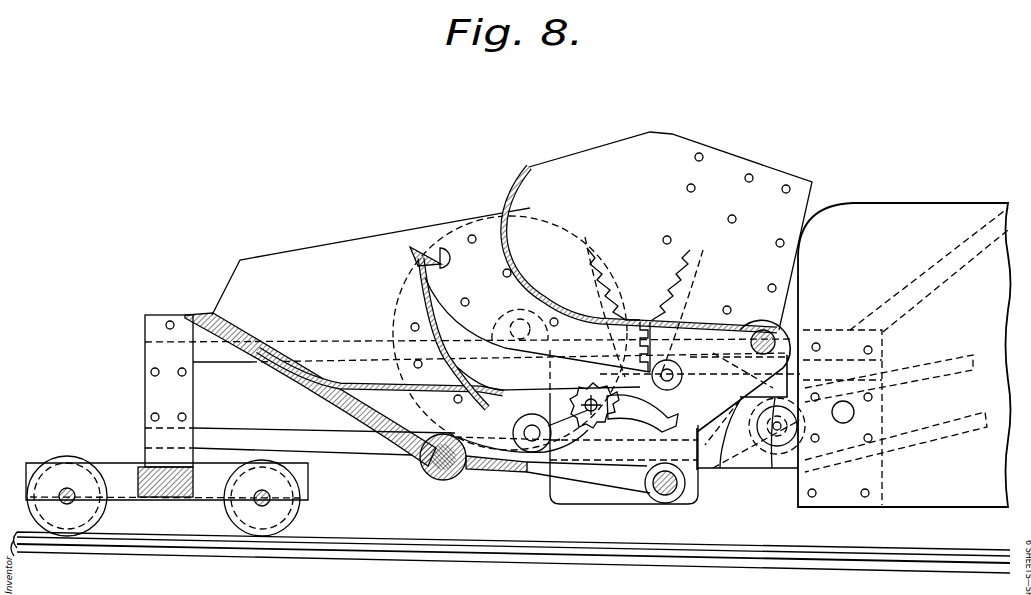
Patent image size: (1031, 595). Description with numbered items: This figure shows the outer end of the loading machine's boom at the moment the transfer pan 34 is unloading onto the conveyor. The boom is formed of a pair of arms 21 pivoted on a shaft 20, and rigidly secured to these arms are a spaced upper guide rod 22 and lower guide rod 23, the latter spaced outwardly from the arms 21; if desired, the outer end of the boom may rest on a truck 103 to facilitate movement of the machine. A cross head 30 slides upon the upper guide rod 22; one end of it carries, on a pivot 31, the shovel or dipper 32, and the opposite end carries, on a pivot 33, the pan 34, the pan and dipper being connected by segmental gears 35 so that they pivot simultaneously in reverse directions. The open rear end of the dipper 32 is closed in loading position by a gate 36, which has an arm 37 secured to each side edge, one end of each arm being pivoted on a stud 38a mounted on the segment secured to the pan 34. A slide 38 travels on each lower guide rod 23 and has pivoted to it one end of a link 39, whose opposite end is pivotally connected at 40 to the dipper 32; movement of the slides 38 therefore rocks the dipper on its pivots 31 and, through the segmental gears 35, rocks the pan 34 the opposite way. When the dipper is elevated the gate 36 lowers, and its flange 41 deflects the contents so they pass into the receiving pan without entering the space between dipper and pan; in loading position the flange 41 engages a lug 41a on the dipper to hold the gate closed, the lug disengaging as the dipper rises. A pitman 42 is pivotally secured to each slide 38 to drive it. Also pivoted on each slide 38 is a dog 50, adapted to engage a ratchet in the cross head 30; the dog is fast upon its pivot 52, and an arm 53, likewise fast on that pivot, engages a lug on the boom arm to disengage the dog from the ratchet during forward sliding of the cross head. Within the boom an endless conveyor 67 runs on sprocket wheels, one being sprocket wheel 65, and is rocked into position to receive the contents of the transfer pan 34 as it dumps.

The shaft 20 is at (855, 412).
The arms 21 is at (310, 389).
The upper guide rod 22 is at (232, 360).
The lower guide rod 23 is at (228, 435).
The cross head 30 is at (585, 326).
The pivot 31 is at (522, 328).
The shovel or dipper 32 is at (318, 250).
The pivot 33 is at (772, 335).
The pan 34 is at (616, 148).
The segmental gears 35 is at (668, 262).
The gate 36 is at (404, 310).
The arm 37 is at (465, 330).
The slide 38 is at (560, 498).
The stud 38a is at (675, 340).
The link 39 is at (498, 470).
The pivotal connection 40 is at (440, 478).
The flange 41 is at (425, 250).
The lug 41a is at (451, 258).
The pitman 42 is at (914, 276).
The dog 50 is at (572, 397).
The pivot 52 is at (608, 495).
The arm 53 is at (615, 425).
The sprocket wheel 65 is at (776, 452).
The endless conveyor 67 is at (923, 366).
The truck 103 is at (106, 466).